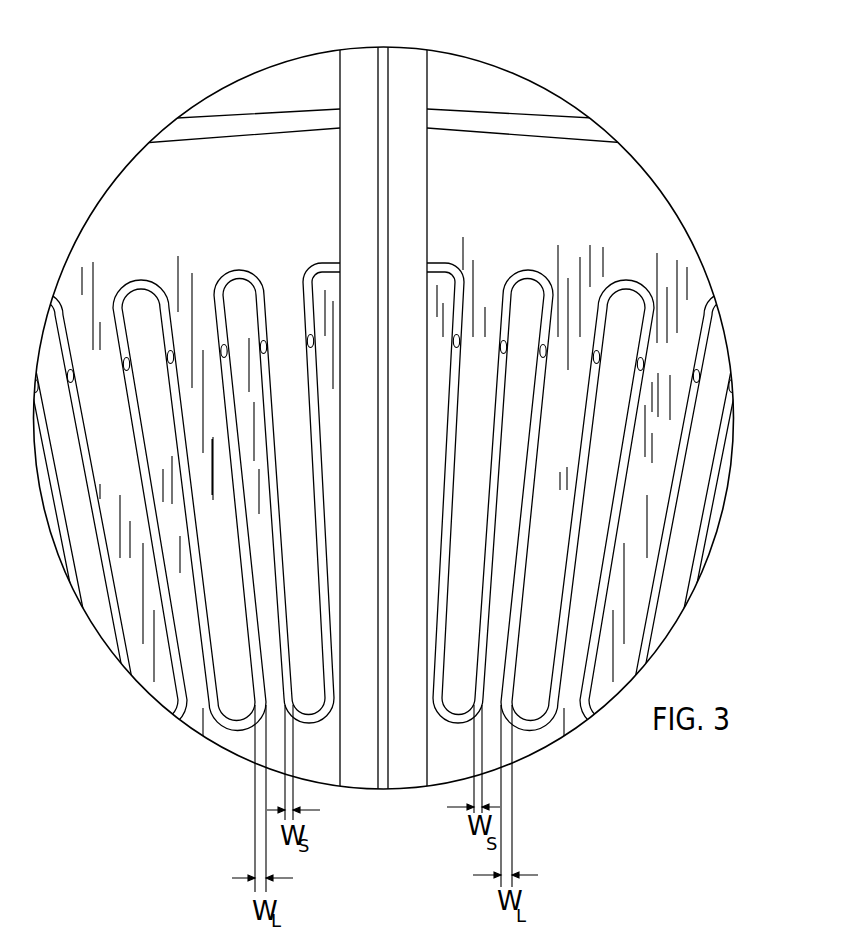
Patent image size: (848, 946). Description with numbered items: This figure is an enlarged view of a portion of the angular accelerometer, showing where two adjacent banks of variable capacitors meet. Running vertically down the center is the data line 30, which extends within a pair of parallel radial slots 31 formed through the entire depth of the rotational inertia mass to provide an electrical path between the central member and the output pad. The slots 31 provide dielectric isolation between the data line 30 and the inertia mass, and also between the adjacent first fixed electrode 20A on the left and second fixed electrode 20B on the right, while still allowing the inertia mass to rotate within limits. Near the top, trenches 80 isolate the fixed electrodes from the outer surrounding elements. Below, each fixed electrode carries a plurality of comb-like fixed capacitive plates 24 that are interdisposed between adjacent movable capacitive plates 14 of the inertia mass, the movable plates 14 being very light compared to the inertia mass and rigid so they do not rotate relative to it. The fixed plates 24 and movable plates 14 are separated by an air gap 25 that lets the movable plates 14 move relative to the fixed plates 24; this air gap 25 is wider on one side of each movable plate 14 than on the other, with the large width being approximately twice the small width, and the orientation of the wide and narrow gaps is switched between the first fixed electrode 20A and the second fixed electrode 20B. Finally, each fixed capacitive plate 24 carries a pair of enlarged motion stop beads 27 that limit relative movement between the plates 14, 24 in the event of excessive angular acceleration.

The movable capacitive plates 14 is at (203, 708).
The first fixed electrode 20A is at (215, 220).
The second fixed electrode 20B is at (502, 217).
The fixed capacitive plates 24 is at (555, 453).
The air gap 25 is at (253, 663).
The motion stop beads 27 is at (120, 363).
The data line 30 is at (390, 95).
The radial slots 31 is at (360, 62).
The trenches 80 is at (266, 120).